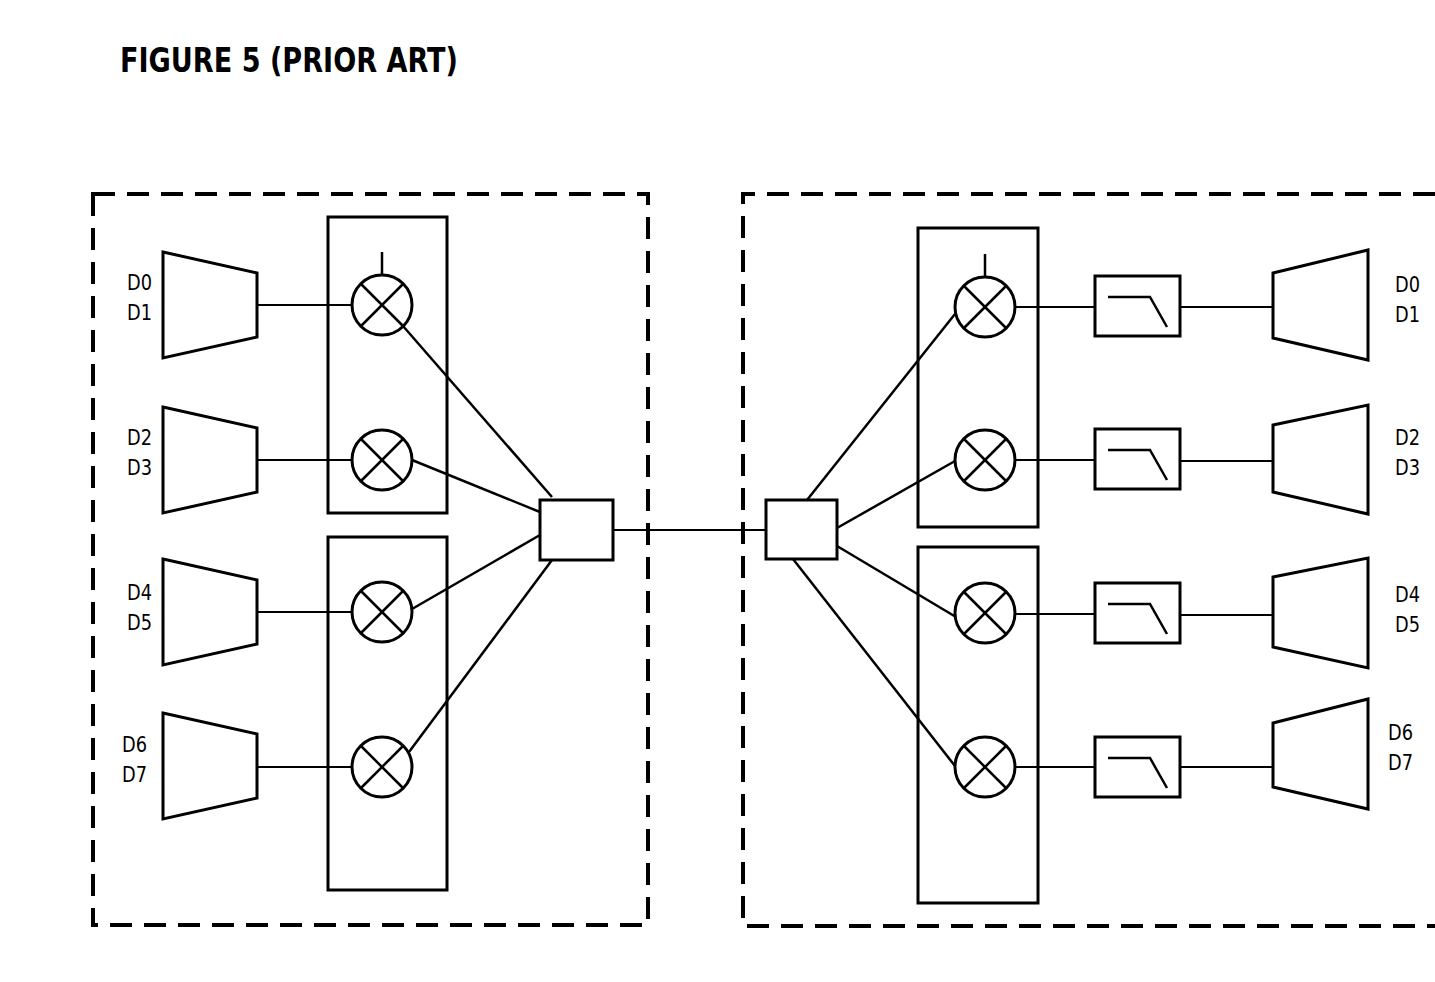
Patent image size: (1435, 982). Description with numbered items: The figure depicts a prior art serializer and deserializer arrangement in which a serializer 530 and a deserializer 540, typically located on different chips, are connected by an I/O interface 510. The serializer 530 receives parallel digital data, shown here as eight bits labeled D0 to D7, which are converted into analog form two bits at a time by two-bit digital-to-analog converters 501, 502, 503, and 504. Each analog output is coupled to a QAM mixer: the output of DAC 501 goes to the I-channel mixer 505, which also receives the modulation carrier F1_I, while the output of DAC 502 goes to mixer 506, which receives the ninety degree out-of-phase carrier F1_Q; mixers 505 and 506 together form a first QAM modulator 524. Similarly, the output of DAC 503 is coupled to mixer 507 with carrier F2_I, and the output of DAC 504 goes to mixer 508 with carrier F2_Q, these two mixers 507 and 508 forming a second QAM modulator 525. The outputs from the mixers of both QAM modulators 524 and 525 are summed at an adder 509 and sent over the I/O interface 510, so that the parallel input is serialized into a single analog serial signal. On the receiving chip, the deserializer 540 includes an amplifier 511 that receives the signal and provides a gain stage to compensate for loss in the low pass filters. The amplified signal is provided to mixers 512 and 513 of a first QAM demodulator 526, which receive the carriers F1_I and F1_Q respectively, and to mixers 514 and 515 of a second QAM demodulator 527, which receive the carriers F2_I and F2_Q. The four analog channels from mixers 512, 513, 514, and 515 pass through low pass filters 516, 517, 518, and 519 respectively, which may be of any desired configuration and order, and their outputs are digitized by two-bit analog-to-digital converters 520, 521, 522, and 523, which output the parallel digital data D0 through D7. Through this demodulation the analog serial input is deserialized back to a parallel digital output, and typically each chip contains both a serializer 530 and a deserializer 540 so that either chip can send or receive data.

The digital-to-analog 2-bit converter 501 is at (257, 305).
The digital-to-analog 2-bit converter 502 is at (257, 460).
The digital-to-analog 2-bit converter 503 is at (257, 612).
The digital-to-analog 2-bit converter 504 is at (257, 766).
The mixer 505 is at (452, 357).
The mixer 506 is at (446, 443).
The mixer 507 is at (446, 606).
The mixer 508 is at (452, 701).
The adder 509 is at (576, 507).
The I/O interface 510 is at (689, 504).
The amplifier 511 is at (801, 511).
The mixer 512 is at (951, 365).
The mixer 513 is at (966, 455).
The mixer 514 is at (966, 613).
The mixer 515 is at (944, 697).
The low pass filter 516 is at (1184, 288).
The low pass filter 517 is at (1184, 441).
The low pass filter 518 is at (1184, 595).
The low pass filter 519 is at (1184, 749).
The two-bit analog-to-digital converter 520 is at (1320, 305).
The two-bit analog-to-digital converter 521 is at (1320, 459).
The two-bit analog-to-digital converter 522 is at (1320, 613).
The two-bit analog-to-digital converter 523 is at (1320, 754).
The QAM modulator 524 is at (414, 365).
The QAM modulator 525 is at (414, 713).
The first QAM demodulator 526 is at (950, 377).
The second QAM demodulator 527 is at (950, 725).
The serializer 530 is at (370, 512).
The deserializer 540 is at (1089, 513).